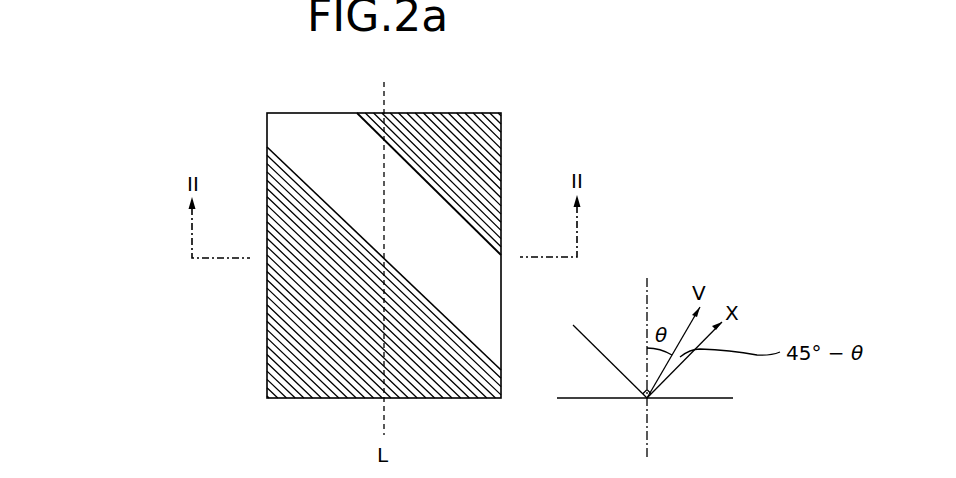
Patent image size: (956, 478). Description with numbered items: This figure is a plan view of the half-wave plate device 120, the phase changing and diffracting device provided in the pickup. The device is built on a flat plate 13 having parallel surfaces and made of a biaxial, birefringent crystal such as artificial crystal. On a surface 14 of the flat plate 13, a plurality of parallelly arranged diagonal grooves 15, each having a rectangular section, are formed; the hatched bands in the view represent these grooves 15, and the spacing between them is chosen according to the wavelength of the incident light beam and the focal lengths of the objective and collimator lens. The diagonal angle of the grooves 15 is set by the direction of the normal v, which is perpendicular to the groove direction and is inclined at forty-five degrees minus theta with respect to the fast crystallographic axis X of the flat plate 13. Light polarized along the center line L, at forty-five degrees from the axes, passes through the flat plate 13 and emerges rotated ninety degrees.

The half-wave plate device 120 is at (518, 120).
The grooves 15 is at (465, 174).
The surface 14 is at (442, 245).
The flat plate 13 is at (475, 284).